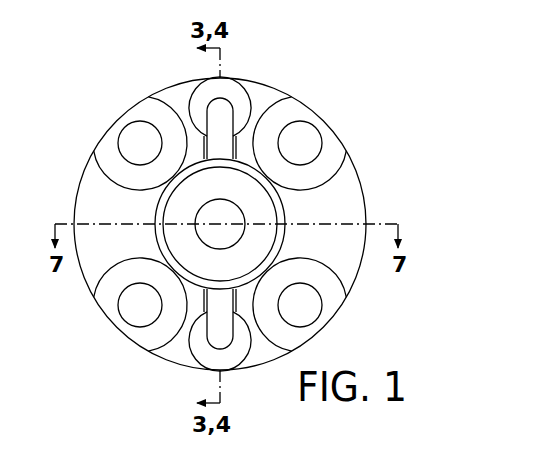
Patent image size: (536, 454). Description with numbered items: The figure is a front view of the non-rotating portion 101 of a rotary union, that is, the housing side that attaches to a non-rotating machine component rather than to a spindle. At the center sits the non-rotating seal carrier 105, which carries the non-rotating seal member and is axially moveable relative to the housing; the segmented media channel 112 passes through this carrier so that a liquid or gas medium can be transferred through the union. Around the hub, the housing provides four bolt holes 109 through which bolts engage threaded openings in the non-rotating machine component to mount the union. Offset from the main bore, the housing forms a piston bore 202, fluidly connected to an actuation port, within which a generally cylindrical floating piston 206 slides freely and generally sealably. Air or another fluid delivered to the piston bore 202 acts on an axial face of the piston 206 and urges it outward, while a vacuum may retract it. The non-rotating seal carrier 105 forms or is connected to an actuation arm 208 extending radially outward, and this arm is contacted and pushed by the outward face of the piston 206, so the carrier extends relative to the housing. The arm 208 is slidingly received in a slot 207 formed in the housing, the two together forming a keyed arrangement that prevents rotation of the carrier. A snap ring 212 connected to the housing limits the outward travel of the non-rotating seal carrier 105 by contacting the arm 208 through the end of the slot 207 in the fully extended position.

The non-rotating portion 101 is at (354, 177).
The non-rotating seal carrier 105 is at (290, 233).
The bolt holes 109 is at (126, 143).
The media channel 112 is at (199, 248).
The piston bore 202 is at (238, 94).
The floating piston 206 is at (232, 94).
The slot 207 is at (236, 318).
The actuation arm 208 is at (213, 133).
The snap ring 212 is at (282, 219).